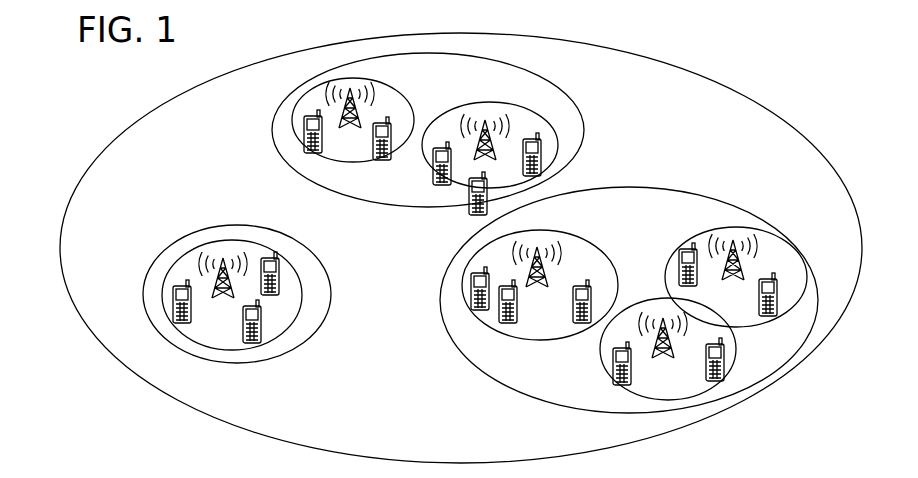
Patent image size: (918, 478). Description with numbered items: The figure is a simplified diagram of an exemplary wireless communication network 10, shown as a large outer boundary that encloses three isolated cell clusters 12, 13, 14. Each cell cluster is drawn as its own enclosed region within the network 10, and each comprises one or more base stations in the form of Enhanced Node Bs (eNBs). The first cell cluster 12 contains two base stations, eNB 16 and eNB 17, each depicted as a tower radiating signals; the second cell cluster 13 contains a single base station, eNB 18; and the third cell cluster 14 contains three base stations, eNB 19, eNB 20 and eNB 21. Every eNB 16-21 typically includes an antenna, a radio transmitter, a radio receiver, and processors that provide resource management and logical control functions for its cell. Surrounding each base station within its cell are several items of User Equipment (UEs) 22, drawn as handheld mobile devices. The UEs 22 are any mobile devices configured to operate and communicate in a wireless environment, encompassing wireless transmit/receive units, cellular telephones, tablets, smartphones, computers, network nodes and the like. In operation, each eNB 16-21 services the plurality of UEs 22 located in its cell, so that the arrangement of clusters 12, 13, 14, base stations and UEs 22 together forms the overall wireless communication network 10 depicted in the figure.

The wireless communication network 10 is at (748, 66).
The cell cluster 12 is at (280, 152).
The cell cluster 13 is at (147, 314).
The cell cluster 14 is at (533, 399).
The Enhanced Node B 16 is at (383, 99).
The Enhanced Node B 17 is at (513, 124).
The Enhanced Node B 18 is at (222, 296).
The Enhanced Node B 19 is at (528, 286).
The Enhanced Node B 20 is at (668, 359).
The Enhanced Node B 21 is at (725, 278).
The User Equipment 22 is at (432, 177).